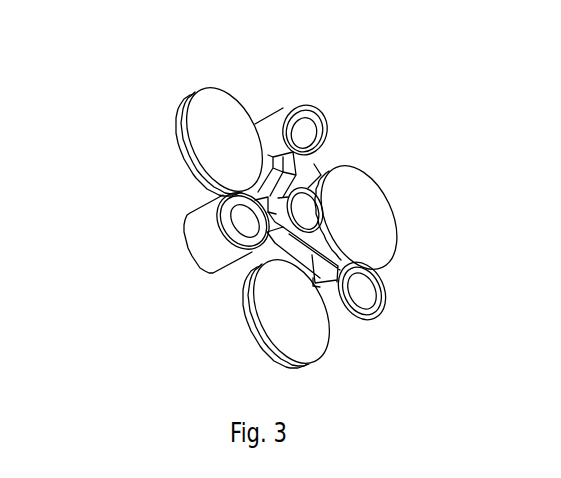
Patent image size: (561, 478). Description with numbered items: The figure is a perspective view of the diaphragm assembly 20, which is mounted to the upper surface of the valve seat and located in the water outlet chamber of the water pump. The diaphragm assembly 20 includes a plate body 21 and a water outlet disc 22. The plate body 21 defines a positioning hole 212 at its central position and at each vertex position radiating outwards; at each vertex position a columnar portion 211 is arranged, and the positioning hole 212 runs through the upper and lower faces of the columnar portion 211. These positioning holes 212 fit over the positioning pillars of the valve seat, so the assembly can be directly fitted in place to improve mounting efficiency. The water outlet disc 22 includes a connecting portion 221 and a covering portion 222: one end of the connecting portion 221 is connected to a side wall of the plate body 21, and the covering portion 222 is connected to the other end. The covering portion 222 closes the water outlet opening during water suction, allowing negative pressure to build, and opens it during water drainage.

The diaphragm assembly 20 is at (291, 66).
The plate body 21 is at (314, 164).
The columnar portion 211 is at (347, 325).
The positioning hole 212 is at (365, 296).
The water outlet disc 22 is at (112, 305).
The connecting portion 221 is at (277, 243).
The covering portion 222 is at (257, 323).